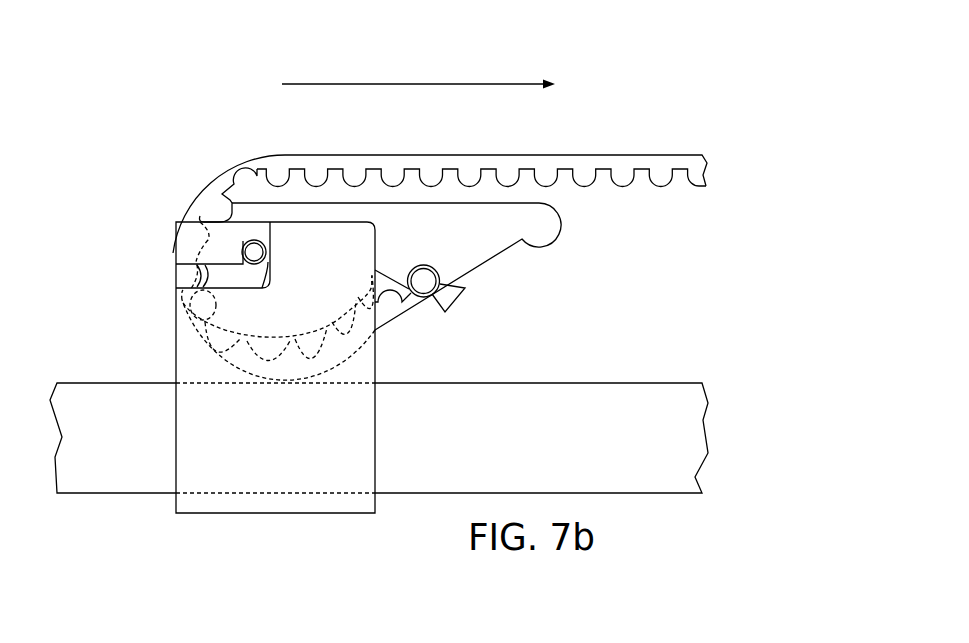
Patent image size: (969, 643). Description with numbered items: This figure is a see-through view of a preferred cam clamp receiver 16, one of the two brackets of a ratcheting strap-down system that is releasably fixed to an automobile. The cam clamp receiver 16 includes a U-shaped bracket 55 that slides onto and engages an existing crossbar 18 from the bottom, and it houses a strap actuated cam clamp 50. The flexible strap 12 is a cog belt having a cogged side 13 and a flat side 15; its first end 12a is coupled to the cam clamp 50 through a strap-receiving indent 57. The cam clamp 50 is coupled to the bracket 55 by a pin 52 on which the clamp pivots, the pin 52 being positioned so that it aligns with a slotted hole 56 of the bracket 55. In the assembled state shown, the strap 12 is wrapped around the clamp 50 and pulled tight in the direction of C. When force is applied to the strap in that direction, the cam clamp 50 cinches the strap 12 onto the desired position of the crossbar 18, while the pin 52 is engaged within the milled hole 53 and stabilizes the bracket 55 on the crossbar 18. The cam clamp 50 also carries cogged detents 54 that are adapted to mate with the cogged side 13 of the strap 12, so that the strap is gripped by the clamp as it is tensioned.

The flexible strap 12 is at (597, 140).
The first end of the flexible strap 12a is at (422, 313).
The cogged side 13 is at (598, 212).
The flat side 15 is at (410, 153).
The cam clamp receiver 16 is at (525, 50).
The crossbar 18 is at (598, 378).
The strap actuated cam clamp 50 is at (233, 220).
The pin 52 is at (248, 258).
The milled hole 53 is at (268, 262).
The cogged detents 54 is at (217, 313).
The U-shaped bracket 55 is at (187, 467).
The slotted hole 56 is at (220, 273).
The strap-receiving indent 57 is at (465, 288).